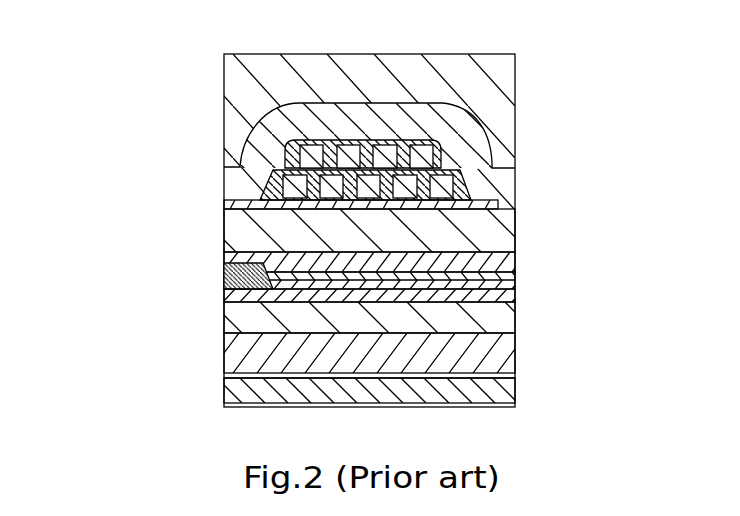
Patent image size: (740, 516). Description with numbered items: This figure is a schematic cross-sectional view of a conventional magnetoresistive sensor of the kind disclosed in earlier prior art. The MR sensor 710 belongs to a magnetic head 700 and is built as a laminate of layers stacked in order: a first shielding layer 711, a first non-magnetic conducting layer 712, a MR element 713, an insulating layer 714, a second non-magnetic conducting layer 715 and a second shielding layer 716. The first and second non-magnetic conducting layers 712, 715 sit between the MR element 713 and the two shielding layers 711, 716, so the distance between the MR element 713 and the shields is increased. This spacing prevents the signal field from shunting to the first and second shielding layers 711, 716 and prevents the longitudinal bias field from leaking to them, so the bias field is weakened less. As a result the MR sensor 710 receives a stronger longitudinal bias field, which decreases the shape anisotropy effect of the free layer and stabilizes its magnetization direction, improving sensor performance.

The magnetic head 700 is at (312, 210).
The MR sensor 710 is at (312, 280).
The first shielding layer 711 is at (250, 233).
The first non-magnetic conducting layer 712 is at (240, 260).
The MR element 713 is at (224, 277).
The insulating layer 714 is at (516, 281).
The second non-magnetic conducting layer 715 is at (225, 295).
The second shielding layer 716 is at (304, 340).